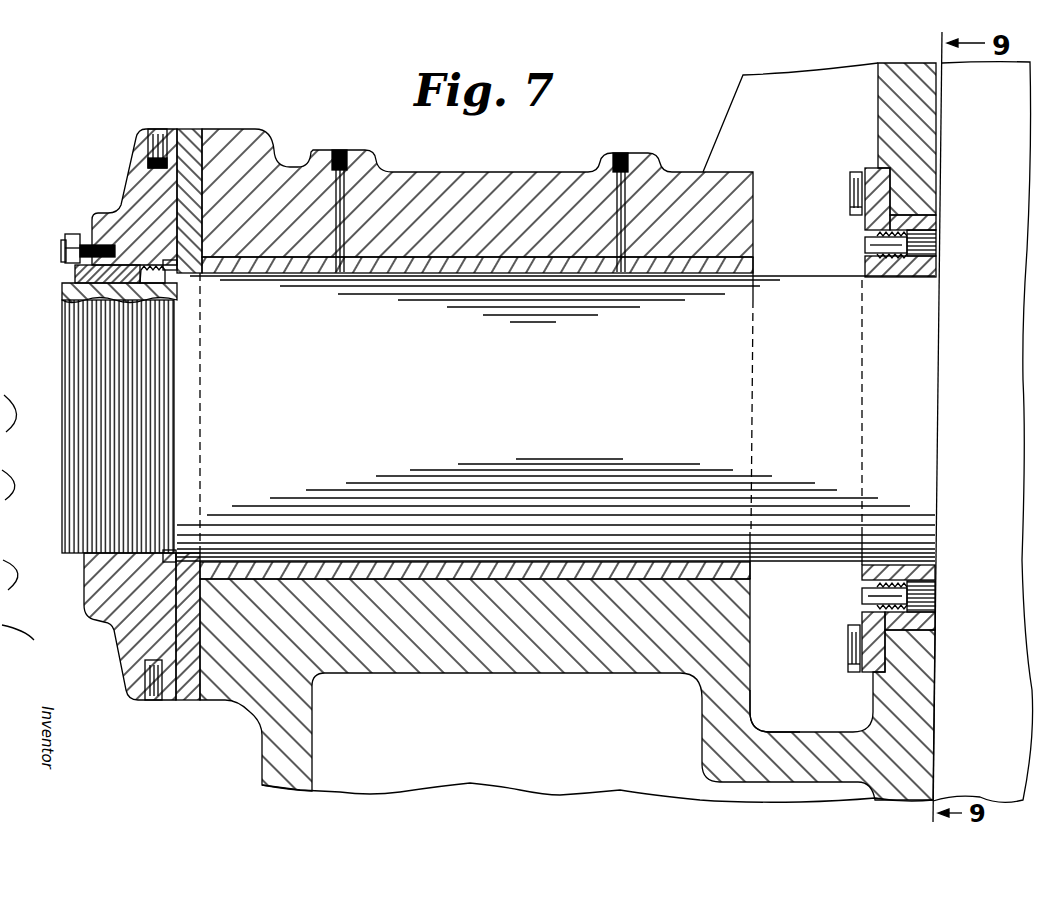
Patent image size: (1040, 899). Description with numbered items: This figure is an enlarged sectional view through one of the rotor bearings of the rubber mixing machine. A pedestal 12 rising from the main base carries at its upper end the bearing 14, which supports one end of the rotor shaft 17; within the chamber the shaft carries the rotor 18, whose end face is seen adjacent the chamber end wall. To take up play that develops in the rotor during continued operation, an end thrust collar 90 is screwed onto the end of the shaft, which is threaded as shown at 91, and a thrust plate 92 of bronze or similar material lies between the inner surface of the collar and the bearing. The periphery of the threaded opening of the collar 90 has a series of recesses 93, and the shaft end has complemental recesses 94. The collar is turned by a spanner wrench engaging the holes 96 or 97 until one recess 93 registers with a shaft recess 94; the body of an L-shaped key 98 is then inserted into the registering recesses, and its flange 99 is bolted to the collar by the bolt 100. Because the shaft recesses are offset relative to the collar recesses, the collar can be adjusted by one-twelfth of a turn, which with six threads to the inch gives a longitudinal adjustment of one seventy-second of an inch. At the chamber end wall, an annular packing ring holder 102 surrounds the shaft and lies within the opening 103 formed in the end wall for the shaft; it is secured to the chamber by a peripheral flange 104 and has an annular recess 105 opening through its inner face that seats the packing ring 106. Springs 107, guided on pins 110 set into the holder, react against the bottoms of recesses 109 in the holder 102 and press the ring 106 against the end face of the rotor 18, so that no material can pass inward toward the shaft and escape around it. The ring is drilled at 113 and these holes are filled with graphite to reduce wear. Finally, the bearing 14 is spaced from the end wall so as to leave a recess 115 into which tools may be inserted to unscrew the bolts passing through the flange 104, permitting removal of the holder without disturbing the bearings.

The pedestal 12 is at (482, 770).
The bearing 14 is at (548, 178).
The rotor shaft 17 is at (544, 397).
The rotor 18 is at (989, 339).
The end thrust collar 90 is at (135, 165).
The threads 91 is at (72, 385).
The thrust plate 92 is at (192, 137).
The recess 93 is at (163, 268).
The recess 94 is at (68, 280).
The hole 96 is at (160, 133).
The hole 97 is at (158, 702).
The L-shaped key 98 is at (120, 272).
The flange 99 is at (78, 235).
The bolt 100 is at (66, 253).
The packing ring holder 102 is at (867, 267).
The opening 103 is at (920, 214).
The peripheral flange 104 is at (875, 176).
The annular recess 105 is at (928, 622).
The packing ring 106 is at (933, 596).
The spring 107 is at (873, 590).
The recess 109 is at (872, 611).
The pin 110 is at (868, 242).
The drill hole 113 is at (938, 248).
The recess 115 is at (753, 697).